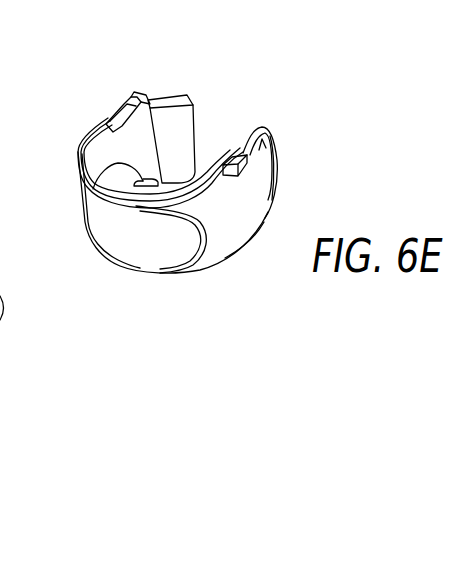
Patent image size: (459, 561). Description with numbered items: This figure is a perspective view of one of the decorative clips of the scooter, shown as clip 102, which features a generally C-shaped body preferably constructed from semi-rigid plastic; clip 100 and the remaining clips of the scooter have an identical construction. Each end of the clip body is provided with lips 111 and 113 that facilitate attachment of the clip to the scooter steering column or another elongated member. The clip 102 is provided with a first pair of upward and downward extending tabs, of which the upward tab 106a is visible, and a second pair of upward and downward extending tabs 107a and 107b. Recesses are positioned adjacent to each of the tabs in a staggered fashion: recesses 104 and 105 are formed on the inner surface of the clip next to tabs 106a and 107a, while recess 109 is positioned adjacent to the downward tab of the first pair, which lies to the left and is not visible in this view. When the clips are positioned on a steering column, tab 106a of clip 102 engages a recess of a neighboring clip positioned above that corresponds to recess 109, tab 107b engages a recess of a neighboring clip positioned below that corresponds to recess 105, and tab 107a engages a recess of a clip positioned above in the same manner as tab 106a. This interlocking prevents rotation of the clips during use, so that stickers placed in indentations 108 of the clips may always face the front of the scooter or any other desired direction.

The clip 100 is at (192, 135).
The clip 102 is at (349, 163).
The recess 104 is at (112, 117).
The recess 105 is at (262, 147).
The upward extending tab 106a is at (133, 95).
The upward extending tab 107a is at (232, 152).
The downward extending tab 107b is at (250, 248).
The indentation 108 is at (148, 250).
The recess 109 is at (115, 165).
The lip 111 is at (177, 95).
The lip 113 is at (278, 167).